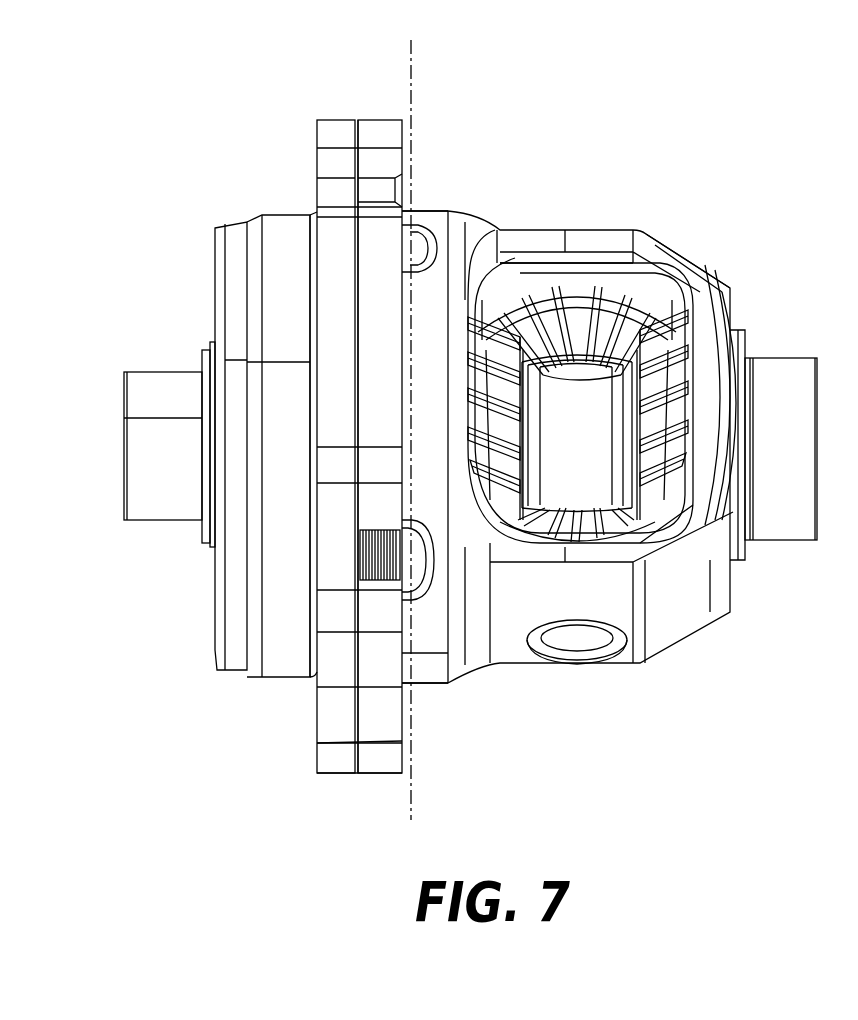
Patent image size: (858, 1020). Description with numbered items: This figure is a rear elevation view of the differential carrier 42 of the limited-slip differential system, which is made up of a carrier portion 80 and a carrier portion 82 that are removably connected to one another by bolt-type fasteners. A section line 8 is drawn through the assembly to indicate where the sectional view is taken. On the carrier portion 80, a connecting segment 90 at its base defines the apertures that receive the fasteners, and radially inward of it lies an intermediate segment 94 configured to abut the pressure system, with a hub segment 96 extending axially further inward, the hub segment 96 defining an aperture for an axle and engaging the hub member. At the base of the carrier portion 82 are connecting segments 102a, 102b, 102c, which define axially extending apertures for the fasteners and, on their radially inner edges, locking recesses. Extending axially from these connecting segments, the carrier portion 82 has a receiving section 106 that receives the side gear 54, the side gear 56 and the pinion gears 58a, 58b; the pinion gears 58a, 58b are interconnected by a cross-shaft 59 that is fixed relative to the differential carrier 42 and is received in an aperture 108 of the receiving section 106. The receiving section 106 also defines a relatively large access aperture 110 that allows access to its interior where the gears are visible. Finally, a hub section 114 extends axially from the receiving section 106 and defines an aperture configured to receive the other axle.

The section line 8- 8 is at (411, 42).
The differential carrier 42 is at (545, 58).
The side gear 54 is at (485, 340).
The side gear 56 is at (675, 370).
The pinion gear 58a is at (533, 347).
The pinion gear 58b is at (603, 520).
The cross-shaft 59 is at (587, 428).
The carrier portion 80 is at (227, 207).
The carrier portion 82 is at (668, 218).
The connecting segment 90 is at (323, 137).
The intermediate segment 94 is at (268, 237).
The hub segment 96 is at (157, 388).
The connecting segment 102a is at (383, 127).
The connecting segment 102b is at (378, 418).
The connecting segment 102c is at (388, 757).
The receiving section 106 is at (585, 218).
The aperture 108 is at (632, 662).
The access aperture 110 is at (703, 298).
The hub section 114 is at (778, 375).